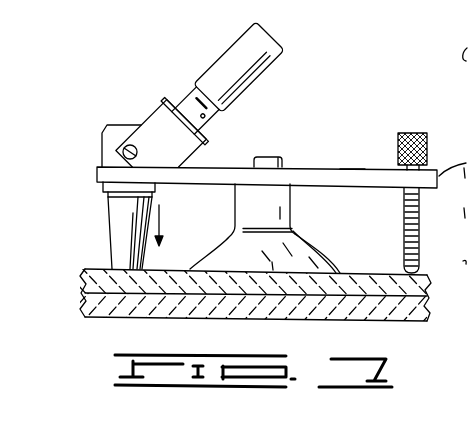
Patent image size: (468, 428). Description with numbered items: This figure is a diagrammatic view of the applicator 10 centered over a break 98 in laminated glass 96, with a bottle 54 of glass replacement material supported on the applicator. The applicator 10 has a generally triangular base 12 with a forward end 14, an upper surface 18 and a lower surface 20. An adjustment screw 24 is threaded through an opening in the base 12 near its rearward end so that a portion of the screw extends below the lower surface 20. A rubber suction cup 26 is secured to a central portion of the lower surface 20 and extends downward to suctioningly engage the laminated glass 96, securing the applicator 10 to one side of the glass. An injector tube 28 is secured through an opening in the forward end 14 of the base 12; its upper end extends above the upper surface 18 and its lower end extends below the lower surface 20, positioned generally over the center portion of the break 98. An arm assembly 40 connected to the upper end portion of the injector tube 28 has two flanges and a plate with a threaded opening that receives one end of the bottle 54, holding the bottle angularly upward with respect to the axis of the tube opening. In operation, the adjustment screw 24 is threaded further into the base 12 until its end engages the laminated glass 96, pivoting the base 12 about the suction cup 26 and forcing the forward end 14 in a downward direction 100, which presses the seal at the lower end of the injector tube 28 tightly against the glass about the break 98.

The applicator 10 is at (298, 97).
The base 12 is at (304, 168).
The forward end 14 is at (97, 172).
The upper surface 18 is at (352, 170).
The lower surface 20 is at (337, 188).
The adjustment screw 24 is at (416, 133).
The suction cup 26 is at (332, 250).
The injector tube 28 is at (109, 228).
The arm assembly 40 is at (156, 103).
The bottle 54 is at (237, 42).
The laminated glass 96 is at (402, 322).
The break 98 is at (113, 271).
The downward direction 100 is at (161, 207).